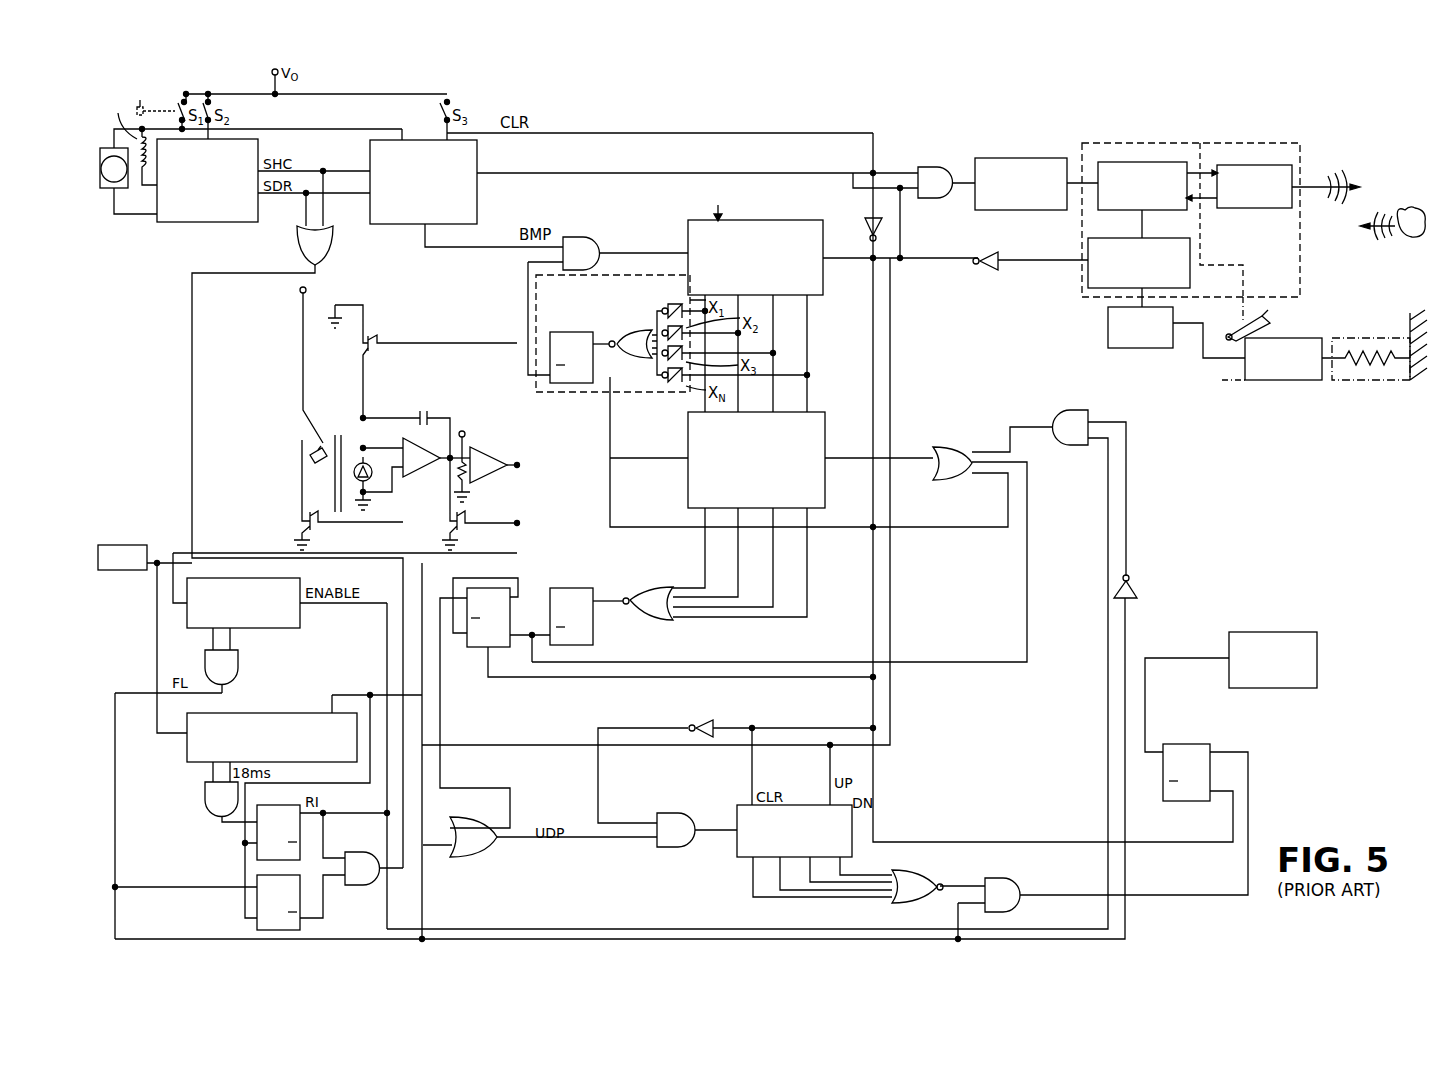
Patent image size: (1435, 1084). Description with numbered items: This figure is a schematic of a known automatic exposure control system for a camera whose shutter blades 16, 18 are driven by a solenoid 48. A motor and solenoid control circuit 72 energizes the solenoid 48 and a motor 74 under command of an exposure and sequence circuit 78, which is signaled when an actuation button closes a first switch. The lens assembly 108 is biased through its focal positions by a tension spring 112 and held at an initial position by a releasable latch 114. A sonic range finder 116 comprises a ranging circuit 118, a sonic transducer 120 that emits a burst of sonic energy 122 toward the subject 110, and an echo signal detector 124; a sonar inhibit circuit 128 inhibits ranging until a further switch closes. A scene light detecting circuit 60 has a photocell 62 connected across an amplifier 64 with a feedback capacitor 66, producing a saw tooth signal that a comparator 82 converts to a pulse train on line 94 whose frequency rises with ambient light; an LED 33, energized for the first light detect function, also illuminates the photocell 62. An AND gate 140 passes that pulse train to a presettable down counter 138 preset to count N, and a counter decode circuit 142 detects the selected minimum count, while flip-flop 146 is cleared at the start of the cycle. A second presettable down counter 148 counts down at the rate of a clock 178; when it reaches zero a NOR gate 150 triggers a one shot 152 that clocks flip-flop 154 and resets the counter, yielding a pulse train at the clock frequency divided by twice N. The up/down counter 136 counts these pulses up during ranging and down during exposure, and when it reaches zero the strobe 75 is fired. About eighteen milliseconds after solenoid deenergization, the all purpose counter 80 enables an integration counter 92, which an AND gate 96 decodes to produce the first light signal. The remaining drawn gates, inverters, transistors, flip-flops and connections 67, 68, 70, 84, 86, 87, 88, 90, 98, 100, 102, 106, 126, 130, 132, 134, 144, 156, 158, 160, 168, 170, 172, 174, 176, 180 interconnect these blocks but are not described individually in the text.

The shutter blade 16 is at (322, 435).
The shutter blade 18 is at (340, 437).
The LED 33 is at (318, 463).
The solenoid 48 is at (137, 114).
The scene light detecting circuit 60 is at (440, 400).
The photocell 62 is at (372, 490).
The amplifier 64 is at (428, 456).
The feedback capacitor 66 is at (421, 405).
The feedback line 67 is at (393, 482).
The amplifier input line 68 is at (393, 448).
The amplifier output node 70 is at (448, 461).
The motor and solenoid control circuit 72 is at (228, 222).
The motor 74 is at (130, 178).
The strobe 75 is at (1290, 632).
The exposure and sequence circuit 78 is at (410, 224).
The all purpose counter 80 is at (280, 713).
The comparator 82 is at (473, 456).
The resistor 84 is at (468, 480).
The transistor 86 is at (465, 530).
The transistor 87 is at (372, 336).
The AND gate 88 is at (205, 795).
The flip-flop 90 is at (257, 832).
The integration counter 92 is at (290, 628).
The line 94 is at (504, 460).
The AND gate 96 is at (238, 668).
The flip-flop 98 is at (257, 902).
The AND gate 100 is at (368, 852).
The OR gate 102 is at (328, 250).
The transistor 106 is at (305, 521).
The lens assembly 108 is at (1305, 338).
The subject 110 is at (1412, 207).
The tension spring 112 is at (1372, 366).
The releasable latch 114 is at (1254, 318).
The sonic range finder 116 is at (1226, 140).
The ranging circuit 118 is at (1140, 162).
The sonic transducer 120 is at (1265, 165).
The burst of sonic energy 122 is at (1348, 172).
The echo signal detector 124 is at (1088, 275).
The AND gate 126 is at (938, 167).
The sonar inhibit circuit 128 is at (1030, 158).
The lens halt 130 is at (1108, 330).
The inverter 132 is at (866, 222).
The inverter 134 is at (714, 722).
The up/down counter 136 is at (800, 805).
The presettable down counter 138 is at (788, 220).
The AND gate 140 is at (593, 237).
The counter decode circuit 142 is at (645, 396).
The NOR gate 144 is at (640, 358).
The flip flop 146 is at (562, 383).
The presettable down counter 148 is at (688, 478).
The NOR gate 150 is at (660, 588).
The one shot 152 is at (594, 635).
The flip-flop 154 is at (512, 600).
The OR gate 156 is at (958, 447).
The AND gate 158 is at (673, 813).
The OR gate 160 is at (478, 857).
The inverter 168 is at (986, 254).
The NOR gate 170 is at (905, 870).
The AND gate 172 is at (1015, 878).
The flip-flop 174 is at (1226, 735).
The AND gate 176 is at (1078, 410).
The clock 178 is at (120, 545).
The inverter 180 is at (1137, 586).